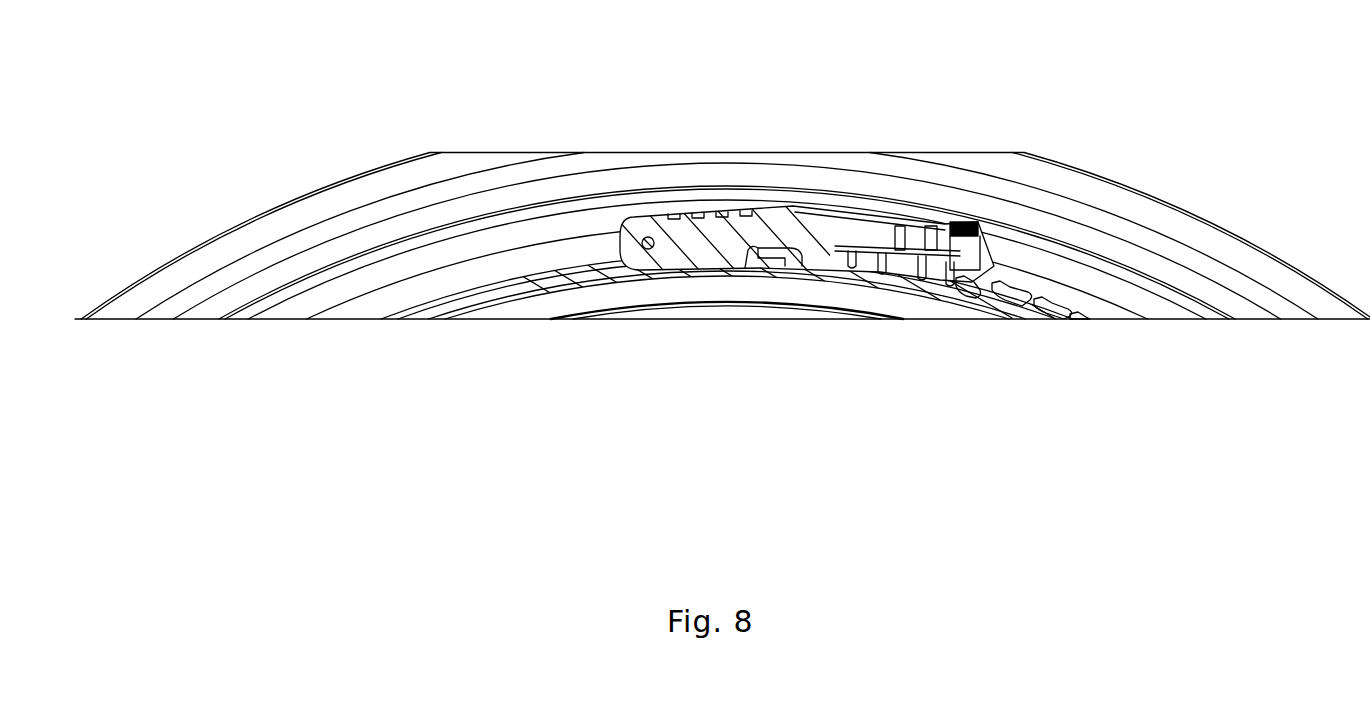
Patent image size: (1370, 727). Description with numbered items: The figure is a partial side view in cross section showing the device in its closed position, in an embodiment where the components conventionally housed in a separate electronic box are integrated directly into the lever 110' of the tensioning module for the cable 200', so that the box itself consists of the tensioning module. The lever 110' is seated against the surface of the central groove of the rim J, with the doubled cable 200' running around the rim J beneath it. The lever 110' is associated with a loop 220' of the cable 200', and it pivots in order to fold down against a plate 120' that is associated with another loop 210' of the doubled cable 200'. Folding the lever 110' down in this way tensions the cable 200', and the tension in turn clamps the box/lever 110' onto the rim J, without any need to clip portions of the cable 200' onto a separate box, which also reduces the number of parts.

The rim J is at (1145, 200).
The lever 110' is at (797, 163).
The plate 120' is at (1077, 358).
The cable 200' is at (759, 329).
The loop 210' is at (1007, 355).
The loop 220' is at (715, 332).